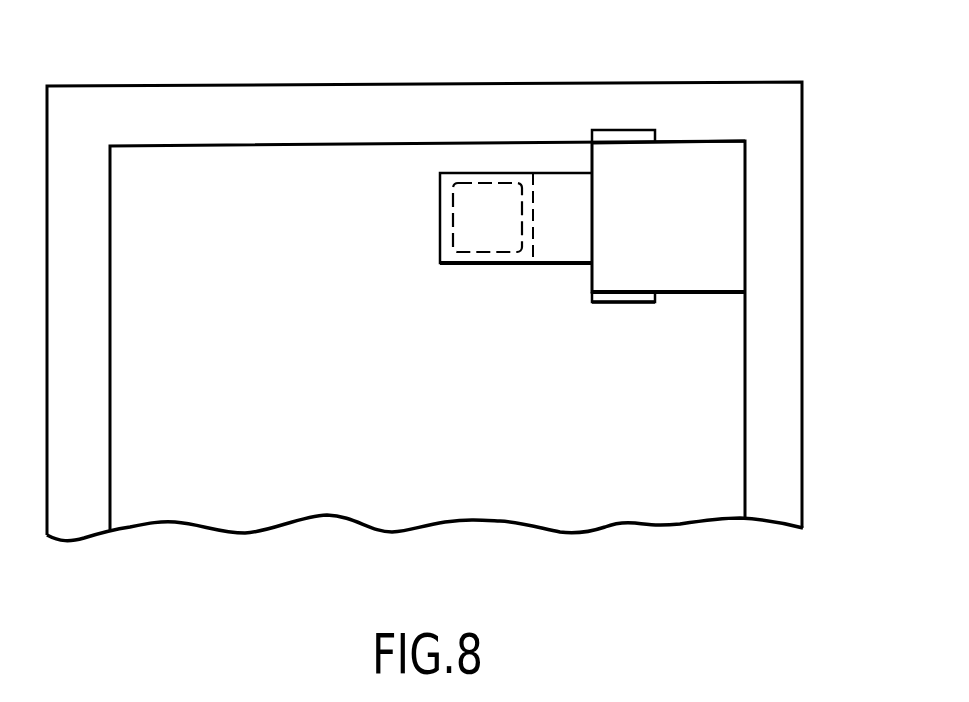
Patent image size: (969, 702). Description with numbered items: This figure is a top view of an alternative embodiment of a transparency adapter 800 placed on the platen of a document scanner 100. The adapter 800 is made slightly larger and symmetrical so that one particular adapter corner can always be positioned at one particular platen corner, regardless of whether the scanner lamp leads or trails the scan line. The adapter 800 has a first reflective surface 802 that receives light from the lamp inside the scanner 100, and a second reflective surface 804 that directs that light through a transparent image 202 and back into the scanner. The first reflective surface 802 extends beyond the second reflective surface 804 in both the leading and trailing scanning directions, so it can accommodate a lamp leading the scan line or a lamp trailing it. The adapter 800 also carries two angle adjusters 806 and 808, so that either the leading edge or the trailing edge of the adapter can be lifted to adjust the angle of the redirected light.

The document scanner 100 is at (803, 447).
The adapter 800 is at (563, 382).
The first reflective surface 802 is at (687, 293).
The second reflective surface 804 is at (547, 172).
The angle adjuster 806 is at (613, 129).
The angle adjuster 808 is at (622, 303).
The image transparency 202 is at (533, 228).